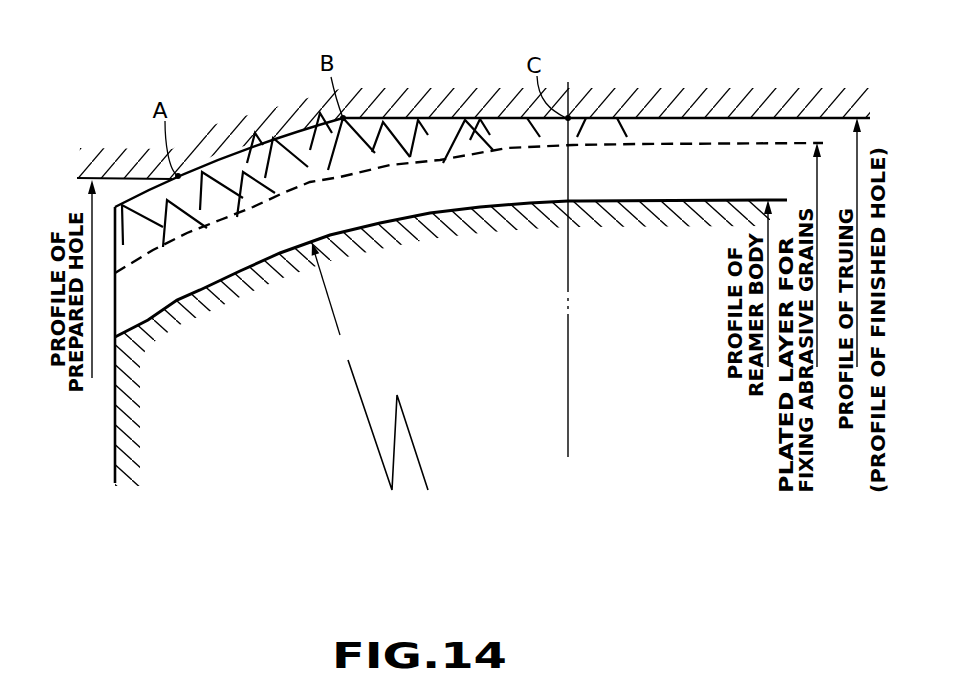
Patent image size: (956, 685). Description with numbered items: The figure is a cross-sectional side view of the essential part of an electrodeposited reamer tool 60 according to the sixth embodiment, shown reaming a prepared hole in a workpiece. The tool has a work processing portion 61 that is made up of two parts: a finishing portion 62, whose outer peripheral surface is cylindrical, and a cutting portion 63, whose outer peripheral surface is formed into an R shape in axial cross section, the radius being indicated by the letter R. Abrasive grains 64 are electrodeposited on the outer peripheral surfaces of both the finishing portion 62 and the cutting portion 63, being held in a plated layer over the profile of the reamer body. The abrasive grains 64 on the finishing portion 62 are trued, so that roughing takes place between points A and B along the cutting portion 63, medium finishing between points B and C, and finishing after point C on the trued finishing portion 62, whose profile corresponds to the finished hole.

The electrodeposited reamer tool 60 is at (96, 437).
The work processing portion 61 is at (115, 505).
The finishing portion 62 is at (660, 408).
The cutting portion 63 is at (443, 405).
The abrasive grains 64 is at (460, 125).